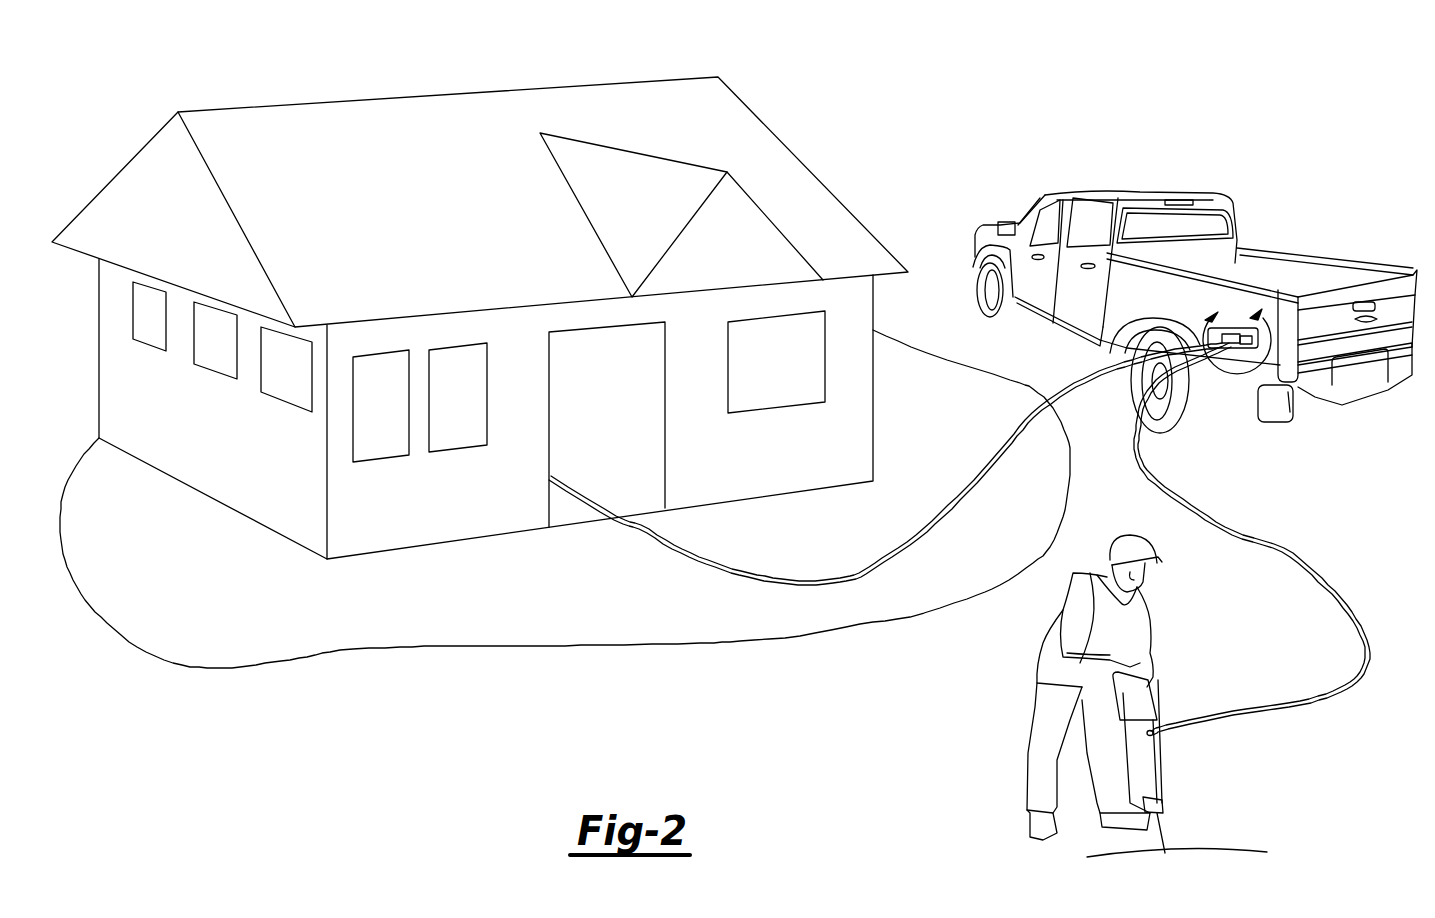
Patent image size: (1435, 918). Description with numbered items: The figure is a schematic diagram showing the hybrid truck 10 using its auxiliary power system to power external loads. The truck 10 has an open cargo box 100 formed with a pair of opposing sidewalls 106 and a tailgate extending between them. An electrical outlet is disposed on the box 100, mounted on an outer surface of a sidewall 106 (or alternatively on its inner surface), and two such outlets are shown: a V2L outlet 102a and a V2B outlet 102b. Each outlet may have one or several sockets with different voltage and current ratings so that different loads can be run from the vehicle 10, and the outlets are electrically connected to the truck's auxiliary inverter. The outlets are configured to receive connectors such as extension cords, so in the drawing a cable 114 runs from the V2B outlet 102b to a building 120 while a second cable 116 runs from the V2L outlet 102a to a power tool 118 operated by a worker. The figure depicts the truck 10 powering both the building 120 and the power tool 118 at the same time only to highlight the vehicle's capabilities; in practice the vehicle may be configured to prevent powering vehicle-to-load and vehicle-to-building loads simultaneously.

The truck 10 is at (1195, 314).
The open cargo box 100 is at (1387, 280).
The V2L outlet 102a is at (1283, 313).
The V2B outlet 102b is at (1232, 360).
The sidewall 106 is at (1238, 388).
The first power cable 114 is at (993, 447).
The second power cable 116 is at (1273, 547).
The power tool 118 is at (1160, 782).
The building 120 is at (403, 95).